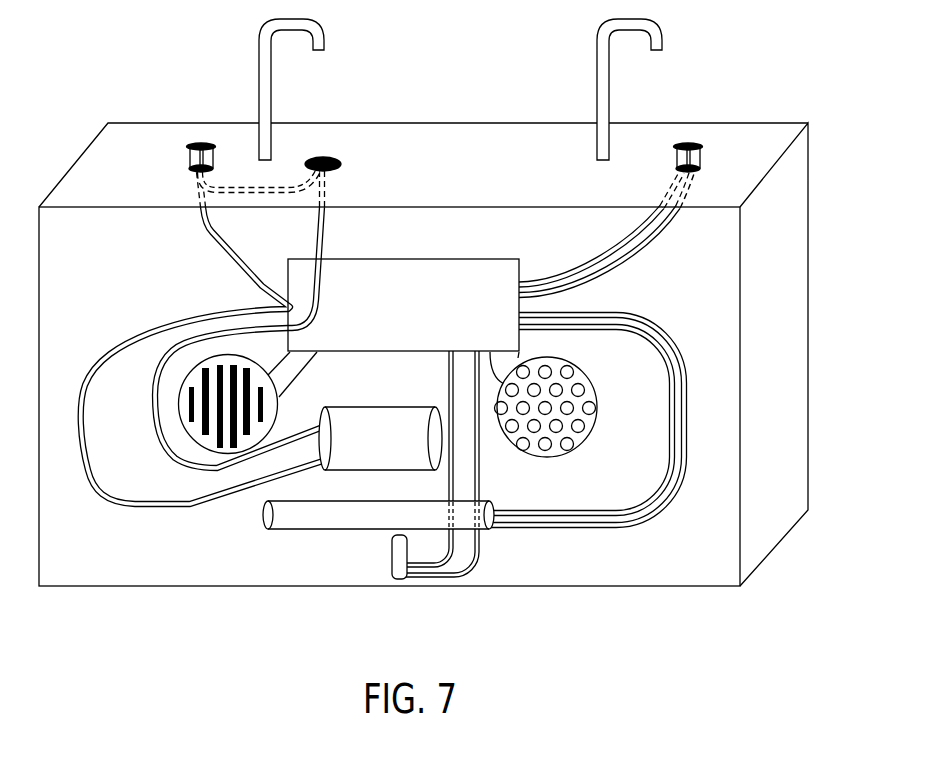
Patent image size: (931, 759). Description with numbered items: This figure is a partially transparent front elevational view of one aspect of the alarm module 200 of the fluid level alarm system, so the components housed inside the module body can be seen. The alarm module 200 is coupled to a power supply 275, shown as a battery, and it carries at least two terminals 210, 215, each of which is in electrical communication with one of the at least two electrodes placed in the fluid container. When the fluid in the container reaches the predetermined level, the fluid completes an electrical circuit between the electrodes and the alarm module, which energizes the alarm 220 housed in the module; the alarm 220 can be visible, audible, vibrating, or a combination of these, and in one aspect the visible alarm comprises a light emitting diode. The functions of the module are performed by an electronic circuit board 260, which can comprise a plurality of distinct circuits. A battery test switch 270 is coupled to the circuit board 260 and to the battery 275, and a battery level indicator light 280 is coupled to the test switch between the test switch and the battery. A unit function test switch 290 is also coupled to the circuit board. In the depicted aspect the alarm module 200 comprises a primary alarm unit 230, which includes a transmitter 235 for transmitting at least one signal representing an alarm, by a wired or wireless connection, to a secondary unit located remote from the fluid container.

The alarm module 200 is at (762, 120).
The terminal 210 is at (428, 578).
The terminal 215 is at (450, 566).
The alarm 220 is at (228, 456).
The primary alarm unit 230 is at (775, 318).
The transmitter 235 is at (322, 520).
The electronic circuit board 260 is at (390, 317).
The battery test switch 270 is at (202, 142).
The power supply 275 is at (365, 451).
The battery level indicator light 280 is at (324, 156).
The unit function test switch 290 is at (689, 142).